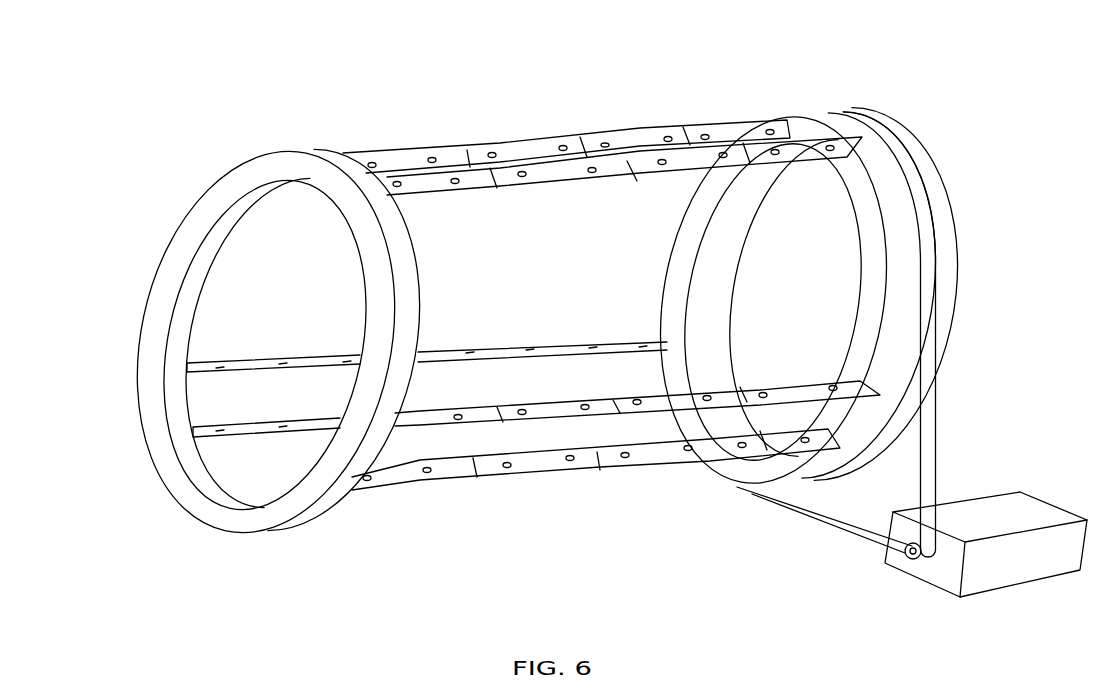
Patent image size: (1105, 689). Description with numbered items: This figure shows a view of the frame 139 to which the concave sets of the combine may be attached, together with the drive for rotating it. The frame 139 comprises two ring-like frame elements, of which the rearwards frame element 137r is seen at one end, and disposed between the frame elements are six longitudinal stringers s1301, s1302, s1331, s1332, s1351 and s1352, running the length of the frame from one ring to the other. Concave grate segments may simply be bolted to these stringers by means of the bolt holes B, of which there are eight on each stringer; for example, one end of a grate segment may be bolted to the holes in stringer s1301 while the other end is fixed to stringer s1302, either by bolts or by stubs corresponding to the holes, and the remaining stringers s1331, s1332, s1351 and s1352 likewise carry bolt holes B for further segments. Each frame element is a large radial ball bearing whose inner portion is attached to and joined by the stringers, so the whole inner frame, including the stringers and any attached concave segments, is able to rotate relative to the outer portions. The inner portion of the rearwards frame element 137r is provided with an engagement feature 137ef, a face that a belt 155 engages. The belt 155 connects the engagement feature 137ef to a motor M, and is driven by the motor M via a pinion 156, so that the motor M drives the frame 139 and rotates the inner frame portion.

The frame 139 is at (1012, 174).
The rearwards frame element 137r is at (945, 228).
The engagement feature 137ef is at (897, 375).
The belt 155 is at (937, 445).
The pinion 156 is at (903, 550).
The motor M is at (1000, 573).
The longitudinal stringer s1332 is at (457, 150).
The longitudinal stringer s1351 is at (745, 157).
The longitudinal stringer s1331 is at (250, 358).
The longitudinal stringer s1352 is at (540, 410).
The longitudinal stringer s1301 is at (643, 457).
The longitudinal stringer s1302 is at (232, 438).
The bolt holes B is at (597, 180).